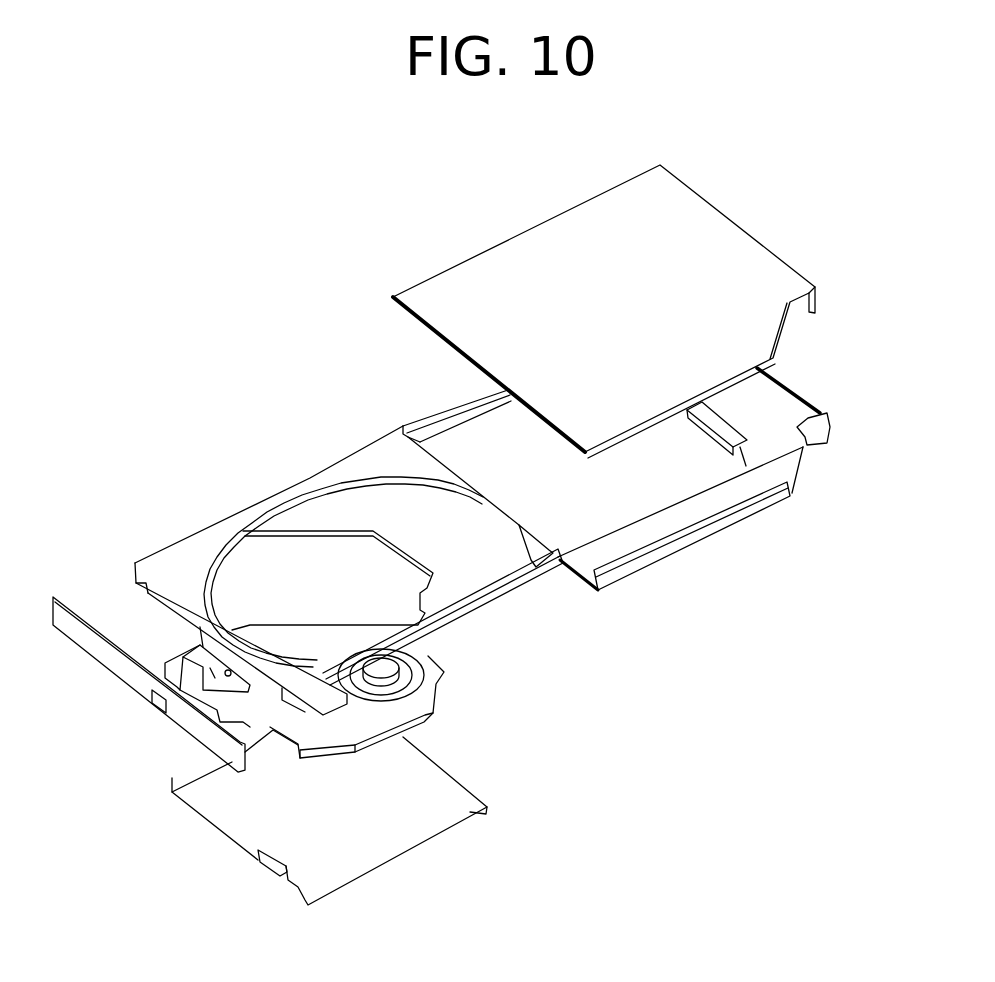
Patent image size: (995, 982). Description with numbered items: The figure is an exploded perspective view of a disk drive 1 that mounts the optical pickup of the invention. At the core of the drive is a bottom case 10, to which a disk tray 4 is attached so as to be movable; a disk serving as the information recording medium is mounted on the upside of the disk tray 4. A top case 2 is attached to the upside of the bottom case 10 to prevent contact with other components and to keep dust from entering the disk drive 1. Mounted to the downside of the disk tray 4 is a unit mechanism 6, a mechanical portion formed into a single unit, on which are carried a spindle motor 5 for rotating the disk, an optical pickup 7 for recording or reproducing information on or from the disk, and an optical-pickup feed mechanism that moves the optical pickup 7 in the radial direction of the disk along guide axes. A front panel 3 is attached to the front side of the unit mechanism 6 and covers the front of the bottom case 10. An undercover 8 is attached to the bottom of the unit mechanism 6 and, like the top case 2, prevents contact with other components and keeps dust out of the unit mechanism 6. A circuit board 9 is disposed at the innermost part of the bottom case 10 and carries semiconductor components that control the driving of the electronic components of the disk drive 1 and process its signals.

The disk drive 1 is at (184, 243).
The top case 2 is at (737, 280).
The front panel 3 is at (107, 660).
The disk tray 4 is at (310, 478).
The spindle motor 5 is at (387, 671).
The unit mechanism 6 is at (432, 700).
The optical pickup 7 is at (203, 643).
The undercover 8 is at (390, 840).
The circuit board 9 is at (765, 415).
The bottom case 10 is at (697, 505).